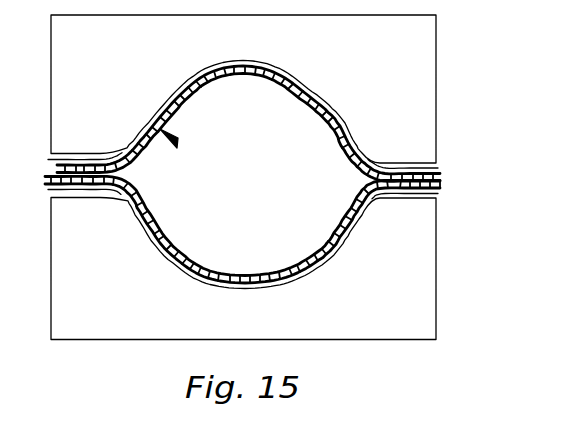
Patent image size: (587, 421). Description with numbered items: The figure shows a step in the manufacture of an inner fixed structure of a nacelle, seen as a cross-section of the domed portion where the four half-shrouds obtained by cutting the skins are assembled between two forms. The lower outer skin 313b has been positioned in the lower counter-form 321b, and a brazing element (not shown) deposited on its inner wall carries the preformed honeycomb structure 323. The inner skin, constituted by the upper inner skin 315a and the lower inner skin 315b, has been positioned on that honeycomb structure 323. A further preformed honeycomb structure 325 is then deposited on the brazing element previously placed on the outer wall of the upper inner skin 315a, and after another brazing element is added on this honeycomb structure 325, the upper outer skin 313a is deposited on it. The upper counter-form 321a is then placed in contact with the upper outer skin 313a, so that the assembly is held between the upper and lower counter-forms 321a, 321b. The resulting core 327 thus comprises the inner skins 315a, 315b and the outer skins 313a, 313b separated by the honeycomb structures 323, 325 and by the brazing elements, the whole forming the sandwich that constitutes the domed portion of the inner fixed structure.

The upper outer skin 313a is at (248, 112).
The lower outer skin 313b is at (242, 236).
The upper inner skin 315a is at (283, 88).
The lower inner skin 315b is at (296, 258).
The upper counter-form 321a is at (404, 103).
The lower counter-form 321b is at (404, 308).
The honeycomb structure 323 is at (182, 247).
The honeycomb structure 325 is at (240, 82).
The core 327 is at (151, 128).